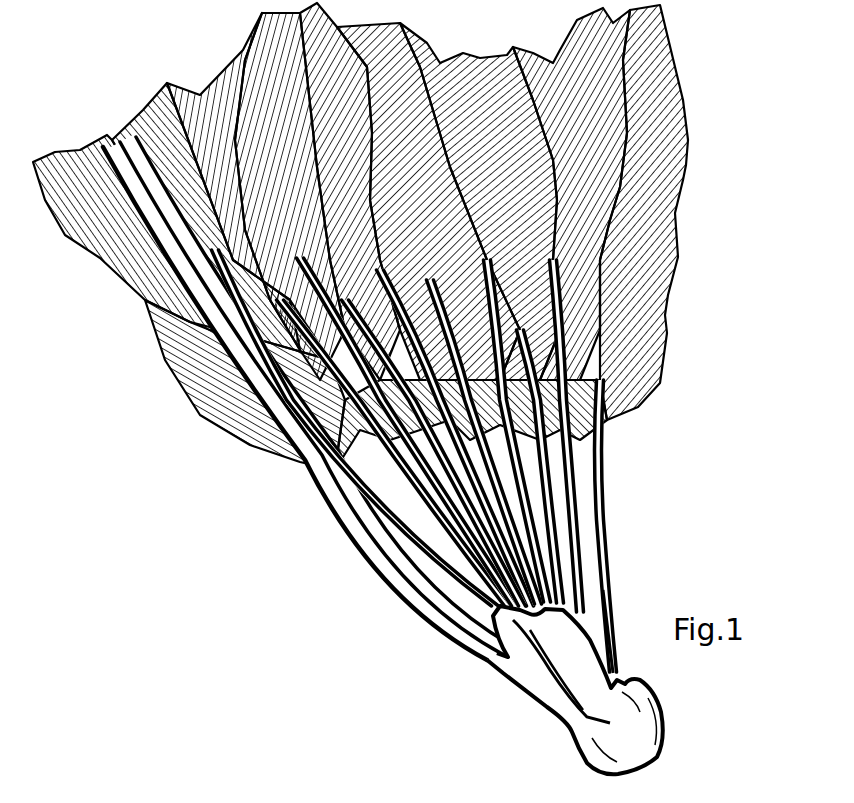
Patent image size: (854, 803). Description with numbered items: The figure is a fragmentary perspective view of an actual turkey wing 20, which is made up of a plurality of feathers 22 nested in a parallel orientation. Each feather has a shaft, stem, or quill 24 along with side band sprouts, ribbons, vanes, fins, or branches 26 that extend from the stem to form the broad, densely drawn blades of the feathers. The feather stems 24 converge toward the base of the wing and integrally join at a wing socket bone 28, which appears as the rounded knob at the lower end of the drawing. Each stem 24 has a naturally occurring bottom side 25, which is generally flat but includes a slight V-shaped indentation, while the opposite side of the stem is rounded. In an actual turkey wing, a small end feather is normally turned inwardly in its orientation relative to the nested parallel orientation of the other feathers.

The turkey wing 20 is at (360, 388).
The feathers 22 is at (287, 22).
The stem 24 is at (392, 485).
The bottom side 25 is at (560, 460).
The vanes 26 is at (560, 48).
The wing socket bone 28 is at (607, 737).